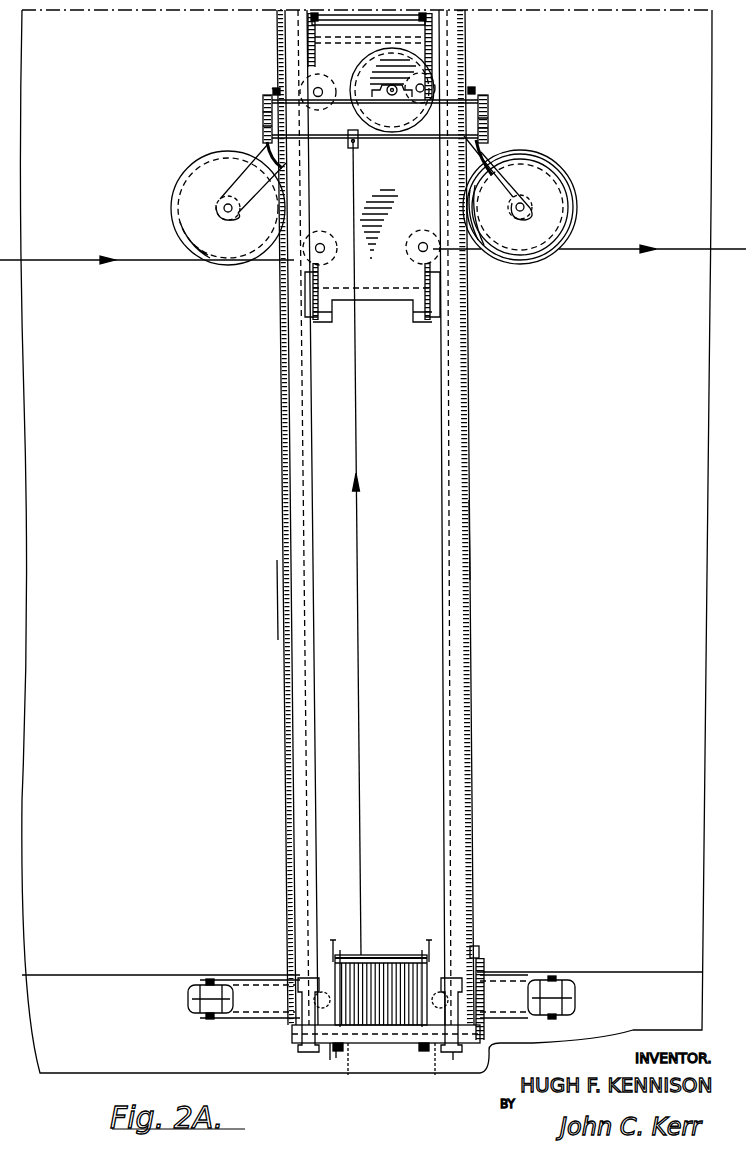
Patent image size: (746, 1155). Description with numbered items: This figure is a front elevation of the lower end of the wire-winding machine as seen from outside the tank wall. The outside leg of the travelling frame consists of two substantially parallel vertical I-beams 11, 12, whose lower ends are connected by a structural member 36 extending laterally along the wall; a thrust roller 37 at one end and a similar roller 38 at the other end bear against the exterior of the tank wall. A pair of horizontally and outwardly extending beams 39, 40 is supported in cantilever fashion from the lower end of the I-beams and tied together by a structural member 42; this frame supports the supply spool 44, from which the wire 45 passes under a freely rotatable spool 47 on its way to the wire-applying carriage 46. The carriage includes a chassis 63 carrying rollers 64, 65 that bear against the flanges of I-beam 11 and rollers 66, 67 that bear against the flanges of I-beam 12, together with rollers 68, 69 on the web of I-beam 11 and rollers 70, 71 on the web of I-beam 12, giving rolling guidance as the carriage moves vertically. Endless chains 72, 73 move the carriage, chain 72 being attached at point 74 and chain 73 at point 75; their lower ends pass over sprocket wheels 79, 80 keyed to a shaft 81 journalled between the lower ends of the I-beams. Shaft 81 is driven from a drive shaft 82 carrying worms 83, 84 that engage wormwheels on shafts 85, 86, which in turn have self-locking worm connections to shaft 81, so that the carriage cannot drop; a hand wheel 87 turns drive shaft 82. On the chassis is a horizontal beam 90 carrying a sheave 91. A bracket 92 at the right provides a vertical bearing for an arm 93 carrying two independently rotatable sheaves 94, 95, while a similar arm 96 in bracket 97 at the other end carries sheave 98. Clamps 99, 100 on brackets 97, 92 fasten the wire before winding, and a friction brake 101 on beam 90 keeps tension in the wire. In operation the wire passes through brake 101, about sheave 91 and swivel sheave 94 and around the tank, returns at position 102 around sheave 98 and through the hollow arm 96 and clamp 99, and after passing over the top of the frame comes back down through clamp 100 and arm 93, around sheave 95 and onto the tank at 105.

The I-beam 11 is at (313, 640).
The I-beam 12 is at (440, 647).
The structural member 36 is at (508, 988).
The thrust roller 37 is at (190, 1000).
The roller 38 is at (577, 1000).
The horizontally extending beam 39 is at (313, 1052).
The horizontally extending beam 40 is at (452, 1055).
The structural member 42 is at (330, 1060).
The supply spool 44 is at (348, 950).
The wire 45 is at (359, 815).
The wire-applying carriage 46 is at (518, 113).
The freely rotatable spool 47 is at (402, 955).
The chassis 63 is at (392, 270).
The roller 64 is at (313, 323).
The roller 65 is at (276, 23).
The roller 66 is at (470, 25).
The roller 67 is at (450, 311).
The roller 68 is at (329, 236).
The roller 69 is at (343, 70).
The roller 70 is at (418, 243).
The roller 71 is at (440, 72).
The endless chain 72 is at (285, 595).
The endless chain 73 is at (470, 540).
The chain attachment point 74 is at (263, 105).
The chain attachment point 75 is at (487, 103).
The sprocket wheel 79 is at (300, 1049).
The sprocket wheel 80 is at (486, 1043).
The shaft 81 is at (478, 1040).
The drive shaft 82 is at (476, 958).
The worm 83 is at (331, 950).
The worm 84 is at (430, 952).
The shaft 85 is at (353, 1073).
The shaft 86 is at (424, 1073).
The hand wheel 87 is at (485, 965).
The horizontal beam 90 is at (425, 128).
The sheave 91 is at (397, 118).
The bracket 92 is at (486, 125).
The arm 93 is at (484, 146).
The sheave 94 is at (560, 232).
The sheave 95 is at (575, 197).
The arm 96 is at (270, 158).
The bracket 97 is at (263, 118).
The sheave 98 is at (200, 183).
The clamp 99 is at (272, 90).
The clamp 100 is at (468, 92).
The friction brake 101 is at (356, 148).
The wire return position 102 is at (150, 259).
The wire onto tank 105 is at (606, 250).